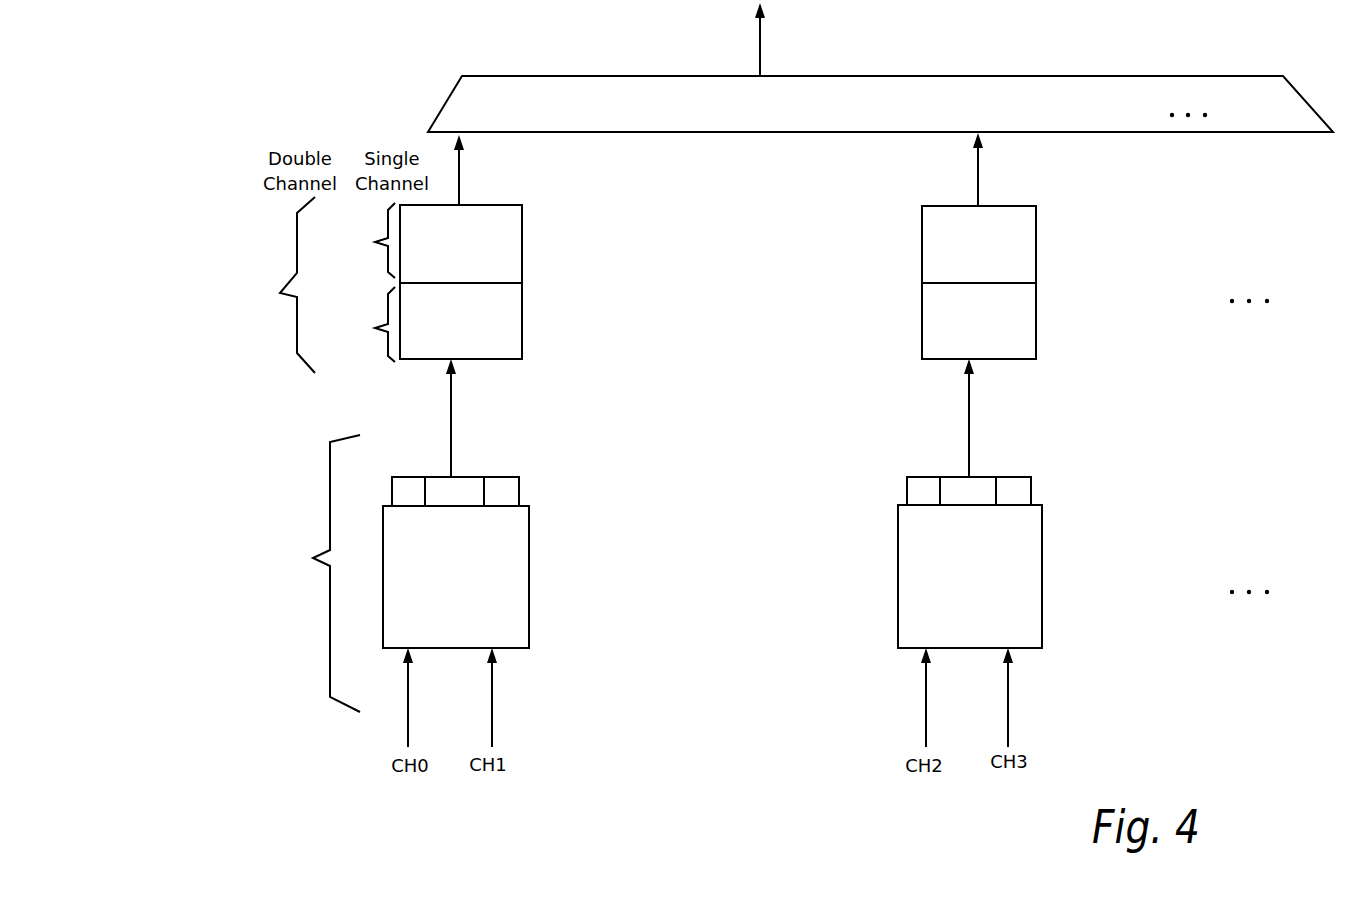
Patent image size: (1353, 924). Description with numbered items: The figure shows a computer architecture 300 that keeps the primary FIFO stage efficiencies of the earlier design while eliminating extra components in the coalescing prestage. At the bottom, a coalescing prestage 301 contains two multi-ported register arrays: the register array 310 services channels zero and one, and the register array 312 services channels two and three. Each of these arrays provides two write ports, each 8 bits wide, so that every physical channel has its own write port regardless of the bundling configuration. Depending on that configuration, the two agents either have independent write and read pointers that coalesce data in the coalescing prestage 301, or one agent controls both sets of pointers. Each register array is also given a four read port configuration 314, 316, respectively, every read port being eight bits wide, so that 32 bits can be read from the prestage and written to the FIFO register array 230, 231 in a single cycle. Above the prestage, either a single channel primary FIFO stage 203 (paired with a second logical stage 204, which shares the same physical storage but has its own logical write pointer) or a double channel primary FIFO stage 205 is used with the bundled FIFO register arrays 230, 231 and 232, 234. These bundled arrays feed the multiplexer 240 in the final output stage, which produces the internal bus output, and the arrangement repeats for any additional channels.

The computer architecture 300 is at (643, 807).
The multiplexer 240 is at (964, 119).
The 32-bit data path 32 is at (752, 59).
The 8-bit port width 8 is at (383, 723).
The FIFO register array 231 is at (441, 256).
The FIFO register array 230 is at (441, 324).
The FIFO register array 234 is at (960, 257).
The FIFO register array 232 is at (960, 326).
The logical FIFO stage 204 is at (363, 240).
The single channel primary FIFO stage 203 is at (360, 324).
The double channel primary FIFO stage 205 is at (287, 285).
The coalescing prestage 301 is at (314, 573).
The four read port configuration 314 is at (519, 493).
The four read port configuration 316 is at (1031, 492).
The multi-ported register array 310 is at (436, 587).
The multi-ported register array 312 is at (952, 584).